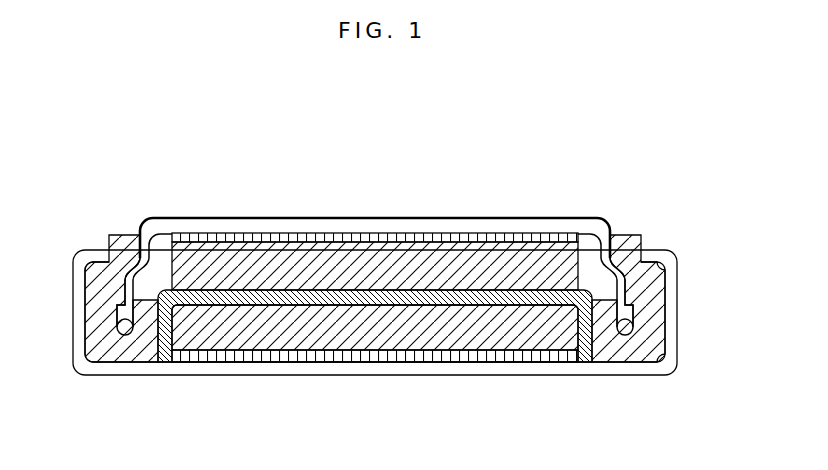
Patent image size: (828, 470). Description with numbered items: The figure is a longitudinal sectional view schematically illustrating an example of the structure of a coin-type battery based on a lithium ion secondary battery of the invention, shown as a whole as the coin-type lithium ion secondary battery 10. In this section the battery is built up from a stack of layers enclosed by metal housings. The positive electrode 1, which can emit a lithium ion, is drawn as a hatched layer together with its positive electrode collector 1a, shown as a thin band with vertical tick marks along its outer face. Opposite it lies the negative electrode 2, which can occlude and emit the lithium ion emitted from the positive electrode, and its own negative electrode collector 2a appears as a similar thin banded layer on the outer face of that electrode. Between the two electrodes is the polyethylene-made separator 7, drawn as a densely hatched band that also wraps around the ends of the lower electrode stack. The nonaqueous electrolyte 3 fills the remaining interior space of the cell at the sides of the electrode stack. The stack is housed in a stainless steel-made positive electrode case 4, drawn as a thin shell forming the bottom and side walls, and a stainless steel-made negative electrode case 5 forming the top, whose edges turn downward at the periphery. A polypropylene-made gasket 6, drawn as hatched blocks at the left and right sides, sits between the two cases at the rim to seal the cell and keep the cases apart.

The positive electrode 1 is at (345, 330).
The positive electrode collector 1a is at (256, 357).
The negative electrode 2 is at (386, 262).
The negative electrode collector 2a is at (271, 237).
The nonaqueous electrolyte 3 is at (160, 248).
The positive electrode case 4 is at (432, 370).
The negative electrode case 5 is at (530, 222).
The gasket 6 is at (106, 345).
The separator 7 is at (477, 300).
The coin-type lithium ion secondary battery 10 is at (456, 168).